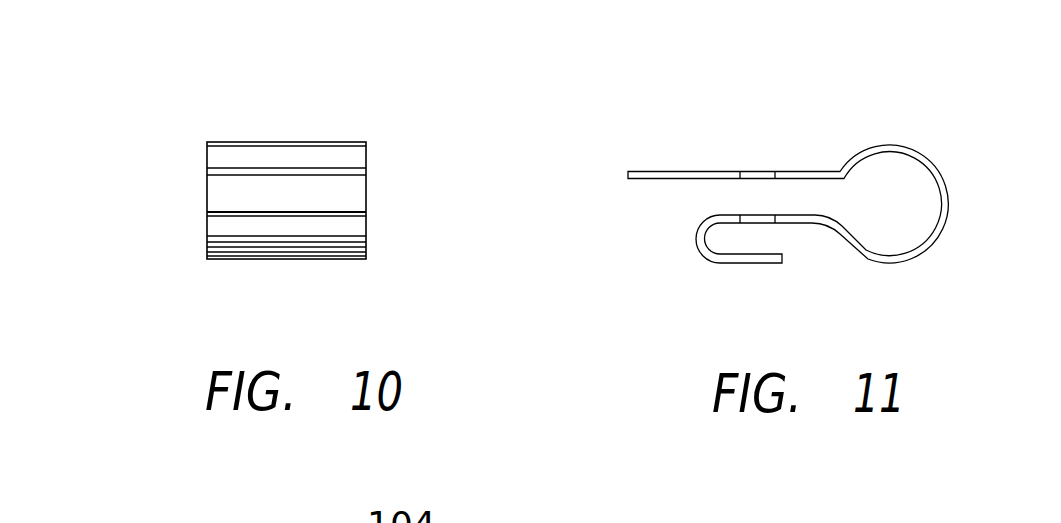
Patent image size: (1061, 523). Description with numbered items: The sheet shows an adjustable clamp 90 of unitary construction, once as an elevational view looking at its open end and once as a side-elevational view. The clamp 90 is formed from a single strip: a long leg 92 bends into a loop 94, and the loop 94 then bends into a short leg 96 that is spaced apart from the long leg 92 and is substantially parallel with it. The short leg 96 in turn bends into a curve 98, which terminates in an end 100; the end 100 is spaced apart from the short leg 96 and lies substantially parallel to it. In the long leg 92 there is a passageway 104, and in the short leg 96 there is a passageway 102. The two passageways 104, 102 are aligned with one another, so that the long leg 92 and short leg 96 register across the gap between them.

In FIG. 10, the clamp 90 is at (275, 193).
In FIG. 11, the clamp 90 is at (872, 147).
In FIG. 10, the long leg 92 is at (255, 172).
In FIG. 11, the long leg 92 is at (652, 171).
In FIG. 10, the loop 94 is at (310, 201).
In FIG. 11, the loop 94 is at (948, 179).
In FIG. 11, the short leg 96 is at (797, 225).
In FIG. 10, the curve 98 is at (213, 229).
In FIG. 11, the curve 98 is at (697, 237).
In FIG. 11, the end 100 is at (782, 257).
In FIG. 11, the passageway 102 is at (755, 216).
In FIG. 11, the passageway 104 is at (757, 171).